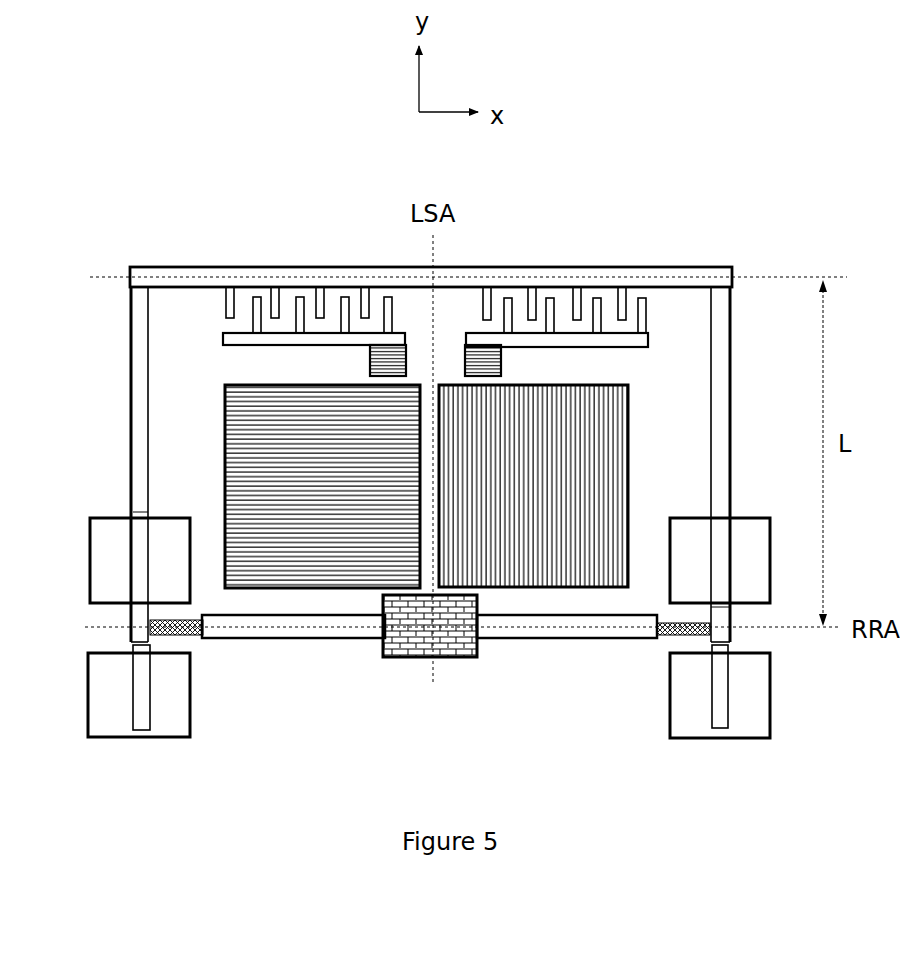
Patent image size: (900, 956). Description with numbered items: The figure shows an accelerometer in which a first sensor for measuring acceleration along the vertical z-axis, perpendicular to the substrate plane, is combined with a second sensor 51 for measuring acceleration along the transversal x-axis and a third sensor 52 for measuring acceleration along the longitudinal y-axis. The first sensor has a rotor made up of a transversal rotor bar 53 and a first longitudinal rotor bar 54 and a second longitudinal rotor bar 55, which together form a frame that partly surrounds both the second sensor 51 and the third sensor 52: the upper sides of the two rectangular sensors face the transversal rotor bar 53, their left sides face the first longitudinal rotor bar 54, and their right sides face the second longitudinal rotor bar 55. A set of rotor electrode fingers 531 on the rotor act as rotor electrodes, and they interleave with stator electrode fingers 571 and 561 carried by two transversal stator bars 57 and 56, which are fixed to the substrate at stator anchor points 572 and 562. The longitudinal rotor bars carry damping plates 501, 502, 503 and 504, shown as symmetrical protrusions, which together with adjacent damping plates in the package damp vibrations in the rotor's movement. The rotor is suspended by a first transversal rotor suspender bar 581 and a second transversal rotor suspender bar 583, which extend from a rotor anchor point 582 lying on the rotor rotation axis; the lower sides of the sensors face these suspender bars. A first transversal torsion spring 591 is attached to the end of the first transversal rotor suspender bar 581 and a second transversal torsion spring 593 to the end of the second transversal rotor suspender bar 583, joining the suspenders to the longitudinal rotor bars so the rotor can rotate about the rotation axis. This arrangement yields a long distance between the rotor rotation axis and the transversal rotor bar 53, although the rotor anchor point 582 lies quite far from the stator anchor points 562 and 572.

The second sensor 51 is at (270, 465).
The third sensor 52 is at (570, 474).
The transversal rotor bar 53 is at (674, 279).
The first longitudinal rotor bar 54 is at (130, 318).
The second longitudinal rotor bar 55 is at (716, 358).
The transversal stator bar 56 is at (546, 340).
The transversal stator bar 57 is at (286, 334).
The damping plate 501 is at (123, 556).
The damping plate 502 is at (112, 697).
The damping plate 503 is at (724, 438).
The damping plate 504 is at (727, 714).
The rotor electrode fingers 531 is at (229, 300).
The stator electrode fingers 561 is at (645, 320).
The stator anchor point 562 is at (485, 361).
The stator electrode fingers 571 is at (388, 318).
The stator anchor point 572 is at (386, 361).
The first transversal rotor suspender bar 581 is at (565, 640).
The rotor anchor point 582 is at (412, 648).
The second transversal rotor suspender bar 583 is at (304, 641).
The first transversal torsion spring 591 is at (673, 633).
The second transversal torsion spring 593 is at (188, 638).